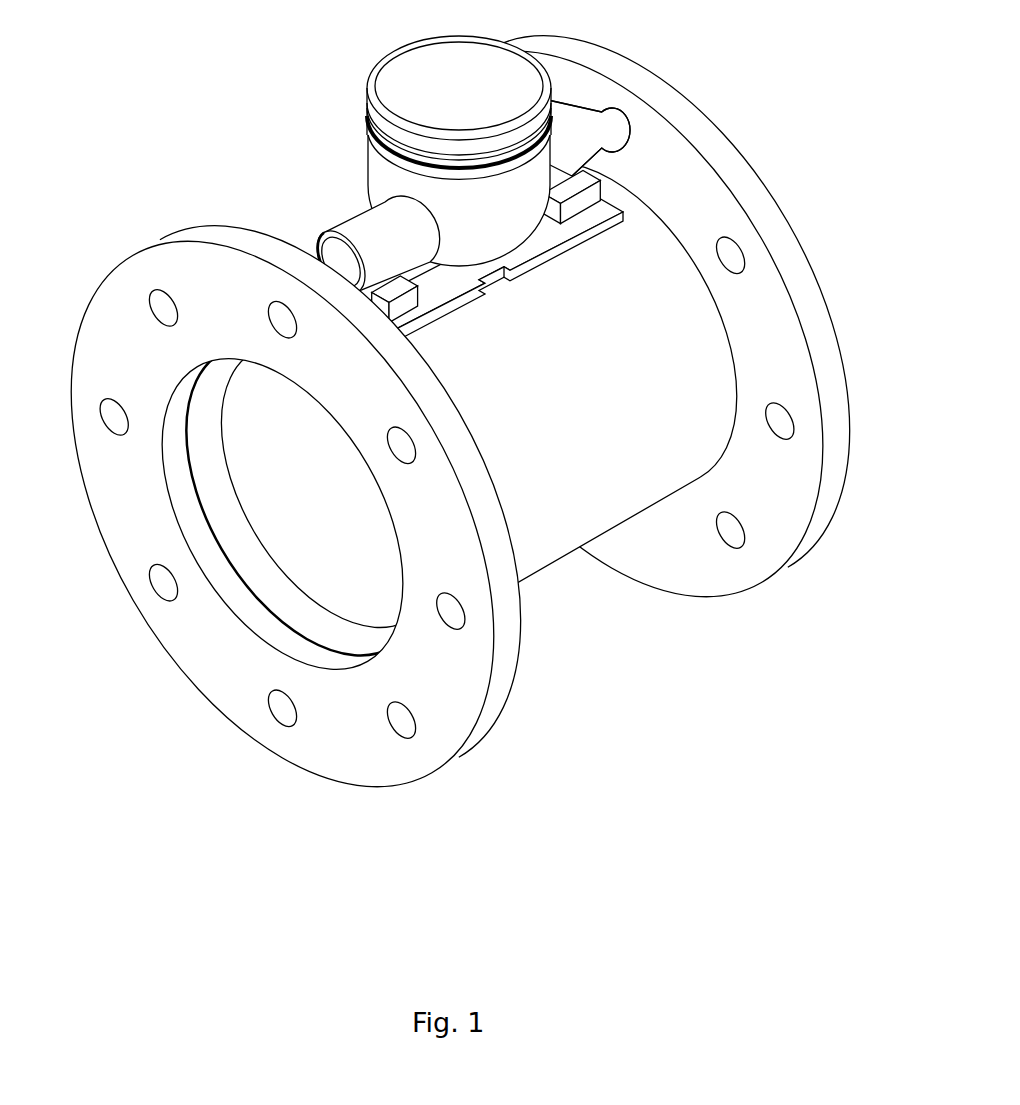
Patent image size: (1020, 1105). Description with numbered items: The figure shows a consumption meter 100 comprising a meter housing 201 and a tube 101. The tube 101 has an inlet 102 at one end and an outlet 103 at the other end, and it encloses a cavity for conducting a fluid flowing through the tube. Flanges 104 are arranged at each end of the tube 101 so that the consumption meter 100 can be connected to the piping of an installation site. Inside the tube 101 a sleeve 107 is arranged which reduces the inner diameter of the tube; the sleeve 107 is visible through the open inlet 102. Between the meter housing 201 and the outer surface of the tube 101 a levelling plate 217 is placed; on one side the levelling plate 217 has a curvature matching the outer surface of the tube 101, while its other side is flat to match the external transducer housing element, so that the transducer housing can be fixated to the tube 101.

The consumption meter 100 is at (457, 429).
The tube 101 is at (587, 433).
The inlet 102 is at (135, 662).
The outlet 103 is at (822, 208).
The flanges 104 is at (825, 497).
The sleeve 107 is at (270, 511).
The meter housing 201 is at (383, 242).
The levelling plate 217 is at (600, 223).